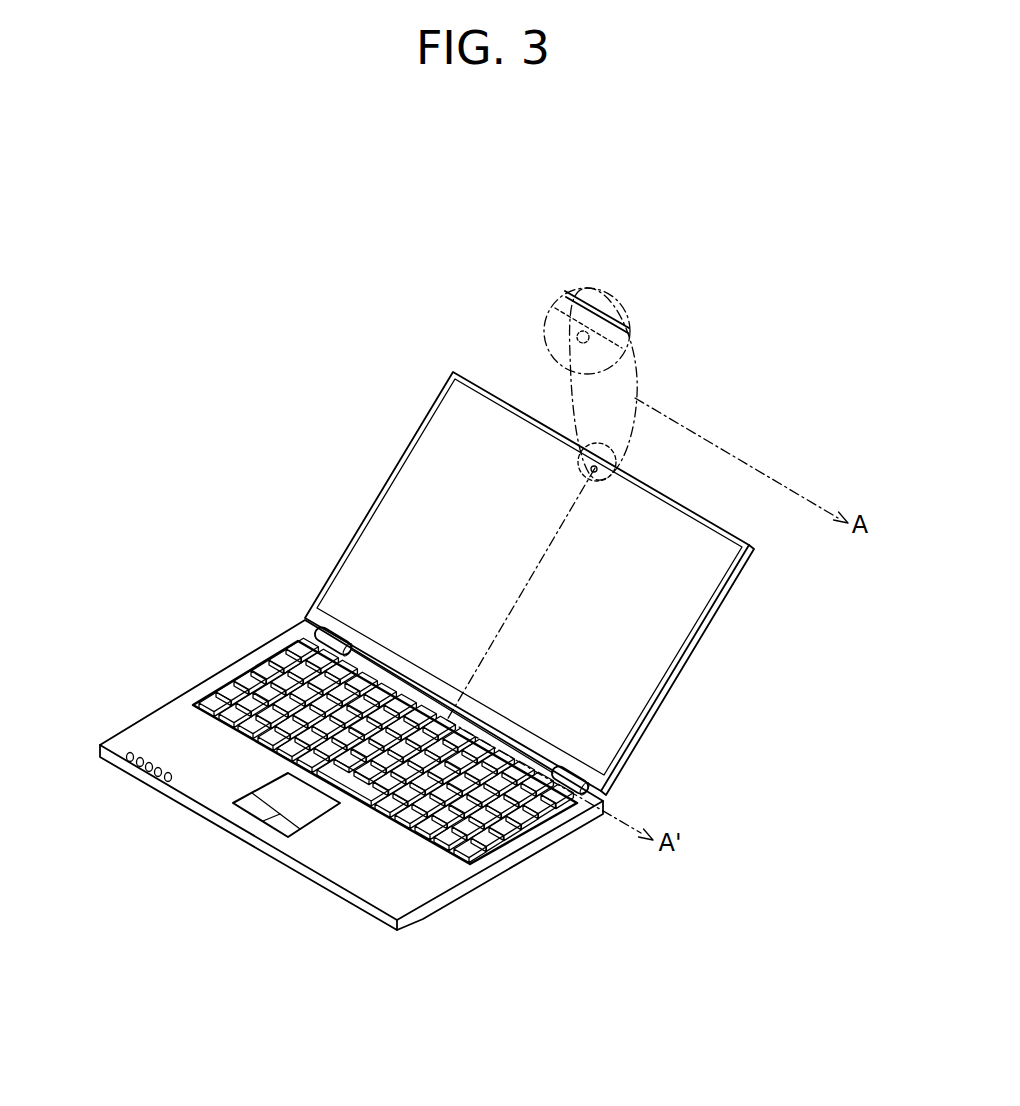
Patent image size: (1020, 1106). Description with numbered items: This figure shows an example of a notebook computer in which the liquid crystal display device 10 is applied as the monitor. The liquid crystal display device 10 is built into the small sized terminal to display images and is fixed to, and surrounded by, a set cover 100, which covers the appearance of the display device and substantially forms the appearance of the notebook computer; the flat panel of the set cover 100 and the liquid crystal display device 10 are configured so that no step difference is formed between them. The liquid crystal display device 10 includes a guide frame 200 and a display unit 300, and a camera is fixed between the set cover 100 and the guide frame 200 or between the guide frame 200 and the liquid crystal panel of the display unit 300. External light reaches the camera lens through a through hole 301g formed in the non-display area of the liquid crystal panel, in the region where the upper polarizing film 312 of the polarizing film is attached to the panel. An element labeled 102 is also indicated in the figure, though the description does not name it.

The liquid crystal display device 10 is at (429, 651).
The set cover 100 is at (687, 662).
The display unit 300 is at (632, 697).
The guide frame 200 is at (620, 336).
The hinge shaft 102 is at (587, 298).
The upper polarizing film 312 is at (553, 336).
The through hole 301g is at (578, 342).